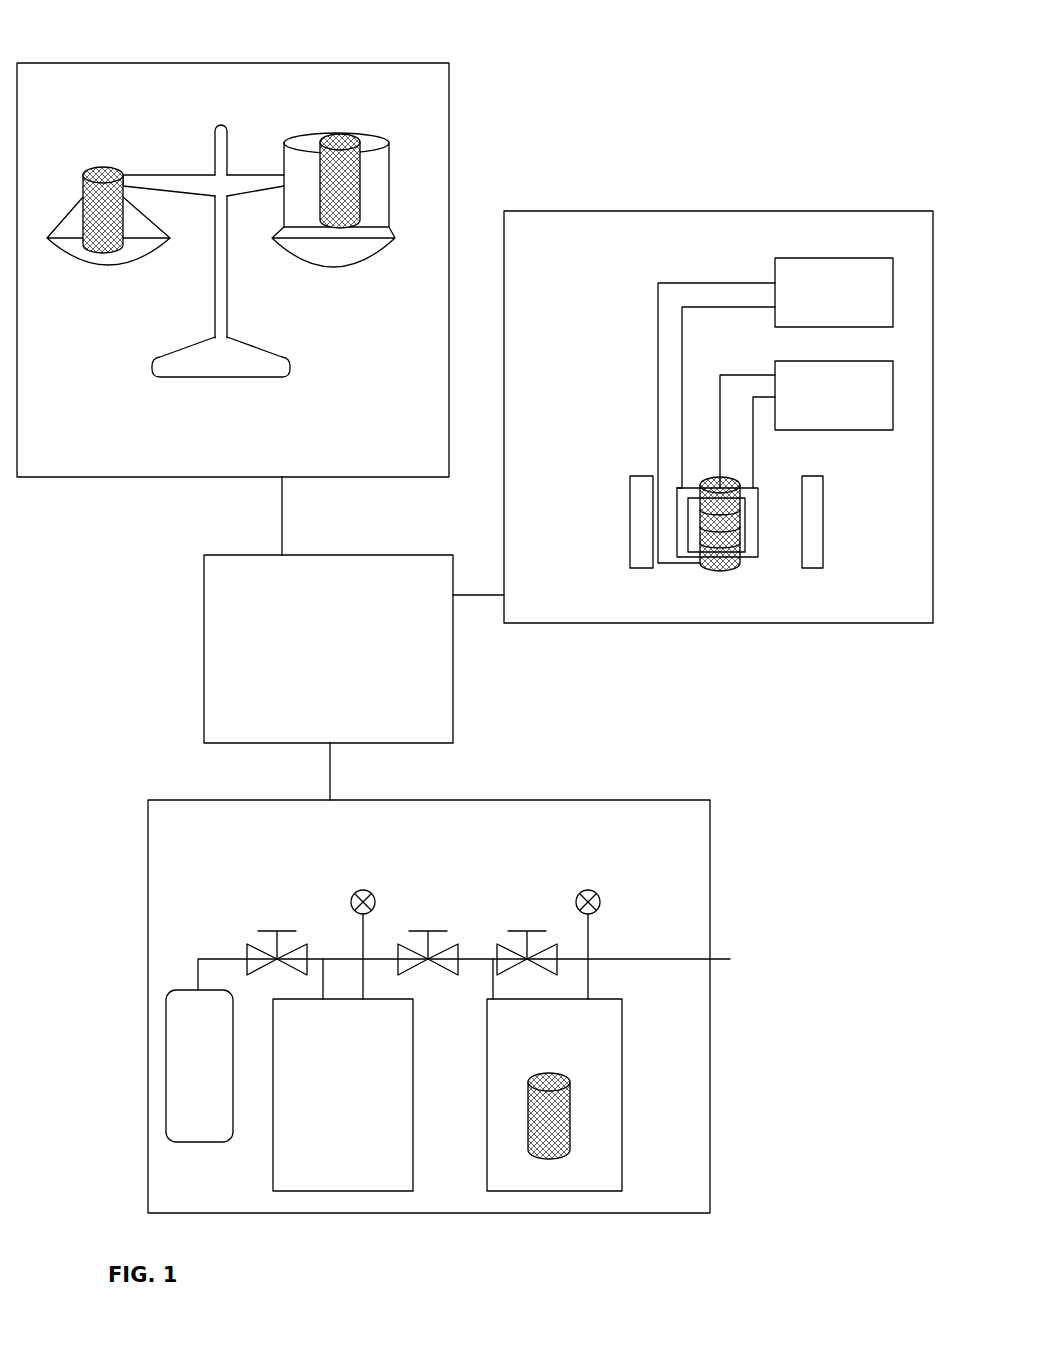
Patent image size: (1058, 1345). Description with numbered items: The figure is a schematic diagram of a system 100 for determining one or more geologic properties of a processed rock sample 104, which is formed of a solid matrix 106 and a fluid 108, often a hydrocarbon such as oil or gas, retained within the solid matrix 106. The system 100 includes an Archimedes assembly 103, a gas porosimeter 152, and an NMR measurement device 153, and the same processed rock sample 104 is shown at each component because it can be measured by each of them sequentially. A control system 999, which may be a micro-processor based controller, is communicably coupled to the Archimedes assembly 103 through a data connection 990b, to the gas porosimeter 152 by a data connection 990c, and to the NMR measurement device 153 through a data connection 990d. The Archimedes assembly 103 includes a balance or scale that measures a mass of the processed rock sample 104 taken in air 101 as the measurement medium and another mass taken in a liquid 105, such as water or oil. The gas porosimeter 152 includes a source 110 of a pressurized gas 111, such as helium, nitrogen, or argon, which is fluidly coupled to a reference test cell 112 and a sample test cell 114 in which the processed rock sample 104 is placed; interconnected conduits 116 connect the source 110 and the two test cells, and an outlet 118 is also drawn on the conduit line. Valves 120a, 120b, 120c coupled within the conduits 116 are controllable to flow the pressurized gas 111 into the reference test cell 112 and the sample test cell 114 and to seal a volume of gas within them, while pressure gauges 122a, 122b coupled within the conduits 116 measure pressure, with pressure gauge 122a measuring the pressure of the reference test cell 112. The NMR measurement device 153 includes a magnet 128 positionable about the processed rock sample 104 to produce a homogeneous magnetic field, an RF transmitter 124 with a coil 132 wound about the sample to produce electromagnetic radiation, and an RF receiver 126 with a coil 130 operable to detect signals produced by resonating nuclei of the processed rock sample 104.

The system 100 is at (156, 38).
The air 101 is at (161, 251).
The Archimedes assembly 103 is at (460, 165).
The processed rock sample 104 is at (113, 258).
The liquid 105 is at (365, 195).
The solid matrix 106 is at (126, 172).
The fluid 108 is at (100, 243).
The source 110 is at (199, 1066).
The pressurized gas 111 is at (183, 1121).
The reference test cell 112 is at (343, 1095).
The sample test cell 114 is at (624, 1032).
The conduits 116 is at (215, 955).
The outlet 118 is at (722, 955).
The valve 120a is at (277, 930).
The valve 120b is at (428, 930).
The valve 120c is at (527, 930).
The pressure gauge 122a is at (360, 889).
The pressure gauge 122b is at (585, 889).
The RF transmitter 124 is at (834, 292).
The RF receiver 126 is at (834, 395).
The magnet 128 is at (628, 520).
The coil 130 is at (758, 462).
The coil 132 is at (703, 283).
The gas porosimeter 152 is at (163, 792).
The NMR measurement device 153 is at (729, 205).
The control system 999 is at (328, 649).
The data connection 990b is at (285, 525).
The data connection 990c is at (332, 768).
The data connection 990d is at (500, 597).